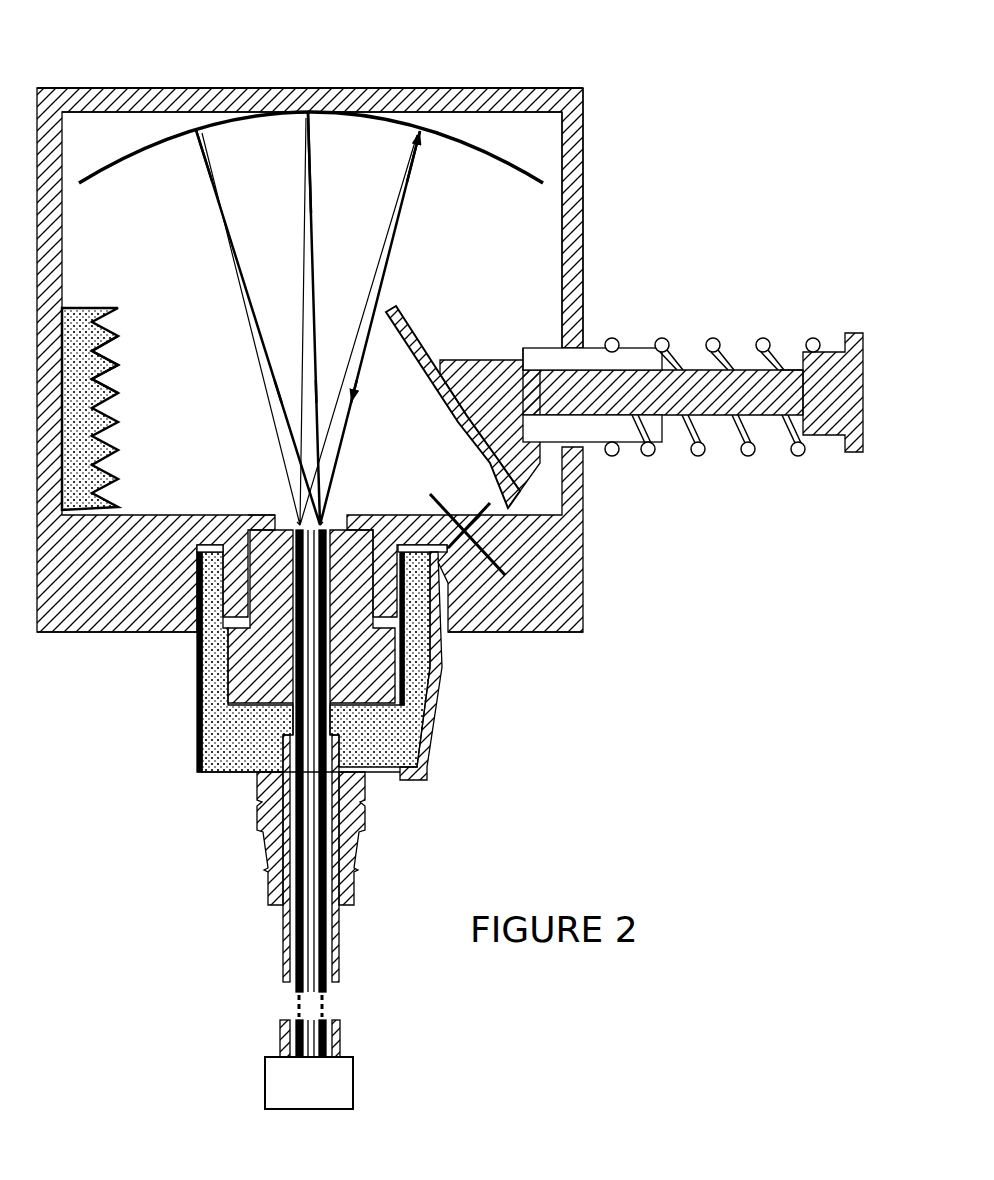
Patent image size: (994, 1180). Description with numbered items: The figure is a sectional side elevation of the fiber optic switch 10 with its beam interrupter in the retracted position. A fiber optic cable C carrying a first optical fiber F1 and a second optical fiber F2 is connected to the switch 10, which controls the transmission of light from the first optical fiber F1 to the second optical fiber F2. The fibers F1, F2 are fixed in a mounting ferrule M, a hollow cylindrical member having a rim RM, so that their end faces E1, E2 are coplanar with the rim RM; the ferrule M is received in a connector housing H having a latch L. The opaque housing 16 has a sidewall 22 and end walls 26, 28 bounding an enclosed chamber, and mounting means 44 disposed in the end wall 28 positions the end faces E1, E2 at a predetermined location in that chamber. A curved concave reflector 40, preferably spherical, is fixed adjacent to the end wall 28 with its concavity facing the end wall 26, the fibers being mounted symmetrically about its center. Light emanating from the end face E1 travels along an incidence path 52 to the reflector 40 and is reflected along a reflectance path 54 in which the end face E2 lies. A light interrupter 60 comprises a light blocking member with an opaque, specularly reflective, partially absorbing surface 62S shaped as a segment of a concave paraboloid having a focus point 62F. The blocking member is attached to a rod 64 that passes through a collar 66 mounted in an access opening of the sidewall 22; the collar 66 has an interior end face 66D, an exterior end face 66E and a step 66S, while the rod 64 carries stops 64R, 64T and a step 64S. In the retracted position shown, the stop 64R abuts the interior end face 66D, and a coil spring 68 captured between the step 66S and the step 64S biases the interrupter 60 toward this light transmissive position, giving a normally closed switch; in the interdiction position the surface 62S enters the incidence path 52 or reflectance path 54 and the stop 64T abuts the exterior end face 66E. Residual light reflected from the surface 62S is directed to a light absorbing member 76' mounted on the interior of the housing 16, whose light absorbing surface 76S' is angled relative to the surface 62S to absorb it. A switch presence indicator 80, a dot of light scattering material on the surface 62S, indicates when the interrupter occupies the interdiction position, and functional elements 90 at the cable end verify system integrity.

The fiber optic switch 10 is at (722, 68).
The housing 16 is at (585, 92).
The sidewall 22 is at (583, 235).
The first end wall 26 is at (500, 633).
The end wall 28 is at (523, 88).
The curved concave reflector 40 is at (525, 180).
The mounting means 44 is at (282, 819).
The incidence path 52 is at (306, 172).
The reflectance path 54 is at (304, 375).
The light interrupter 60 is at (630, 388).
The opaque light blocking surface 62S is at (445, 407).
The focus point 62F is at (462, 518).
The rod 64 is at (768, 418).
The stop 64R is at (598, 450).
The step 64S is at (833, 350).
The stop 64T is at (793, 365).
The collar 66 is at (598, 347).
The interior end face 66D is at (522, 348).
The step 66S is at (632, 345).
The exterior end face 66E is at (680, 435).
The coil spring 68 is at (798, 457).
The light absorber 76' is at (106, 385).
The light absorbing surface 76S' is at (149, 356).
The switch presence indicator 80 is at (457, 418).
The rim RM is at (258, 514).
The end face E1 is at (297, 522).
The end face E2 is at (350, 497).
The mounting ferrule M is at (212, 664).
The latch L is at (440, 670).
The connector housing H is at (228, 774).
The fiber optic cable C is at (283, 930).
The first optical fiber F1 is at (290, 992).
The second optical fiber F2 is at (333, 992).
The functional elements 90 is at (309, 1083).